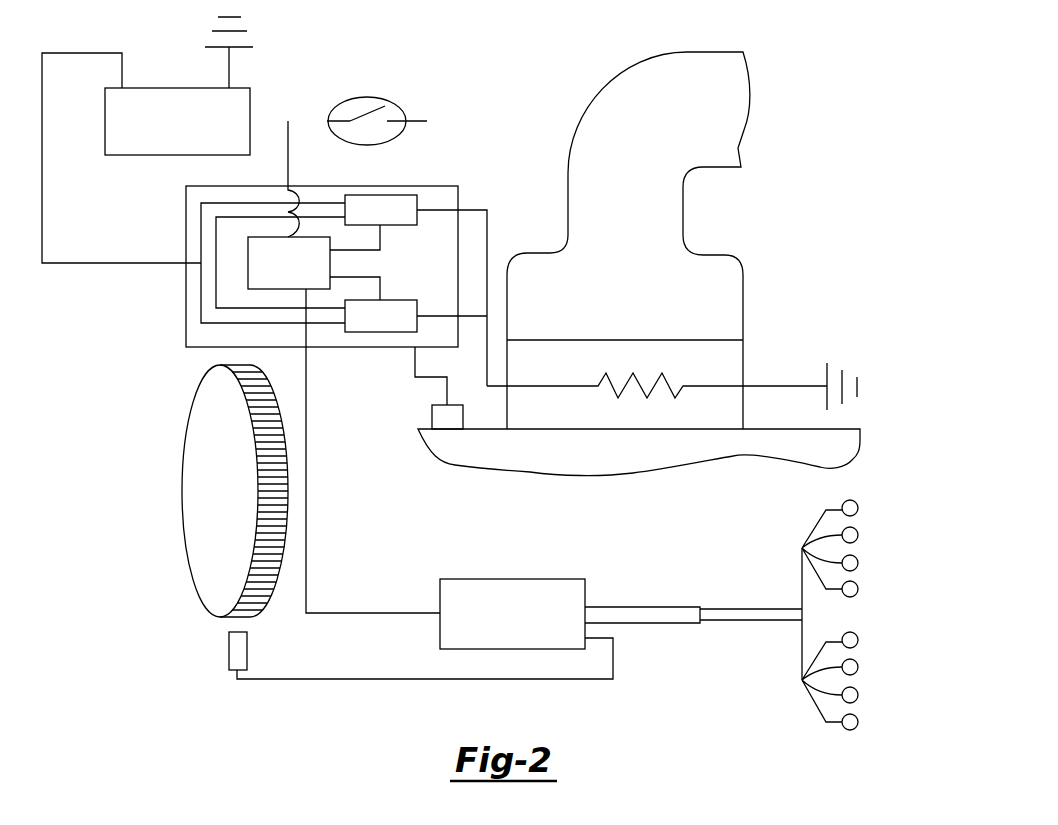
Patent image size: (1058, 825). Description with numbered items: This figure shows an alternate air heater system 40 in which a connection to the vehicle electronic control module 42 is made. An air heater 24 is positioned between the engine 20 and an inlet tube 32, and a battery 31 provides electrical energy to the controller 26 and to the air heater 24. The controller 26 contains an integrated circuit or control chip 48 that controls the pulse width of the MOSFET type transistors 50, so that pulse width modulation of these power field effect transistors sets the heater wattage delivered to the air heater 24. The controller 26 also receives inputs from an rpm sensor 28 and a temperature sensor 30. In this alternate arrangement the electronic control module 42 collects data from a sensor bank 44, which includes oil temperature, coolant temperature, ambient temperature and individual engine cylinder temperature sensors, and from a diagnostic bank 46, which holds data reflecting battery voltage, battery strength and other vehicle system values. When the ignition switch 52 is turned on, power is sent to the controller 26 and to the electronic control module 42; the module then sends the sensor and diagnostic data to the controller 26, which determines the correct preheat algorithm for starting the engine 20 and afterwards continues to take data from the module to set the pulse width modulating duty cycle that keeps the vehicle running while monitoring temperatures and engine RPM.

The engine 20 is at (633, 461).
The air heater 24 is at (638, 372).
The controller 26 is at (186, 303).
The rpm sensor 28 is at (229, 652).
The temperature sensor 30 is at (432, 418).
The battery 31 is at (132, 155).
The inlet tube 32 is at (640, 291).
The alternate air heater system 40 is at (486, 125).
The electronic control module 42 is at (527, 620).
The sensor bank 44 is at (863, 548).
The diagnostic bank 46 is at (864, 680).
The control chip 48 is at (330, 262).
The MOSFET type transistors 50 is at (410, 194).
The ignition switch 52 is at (396, 105).